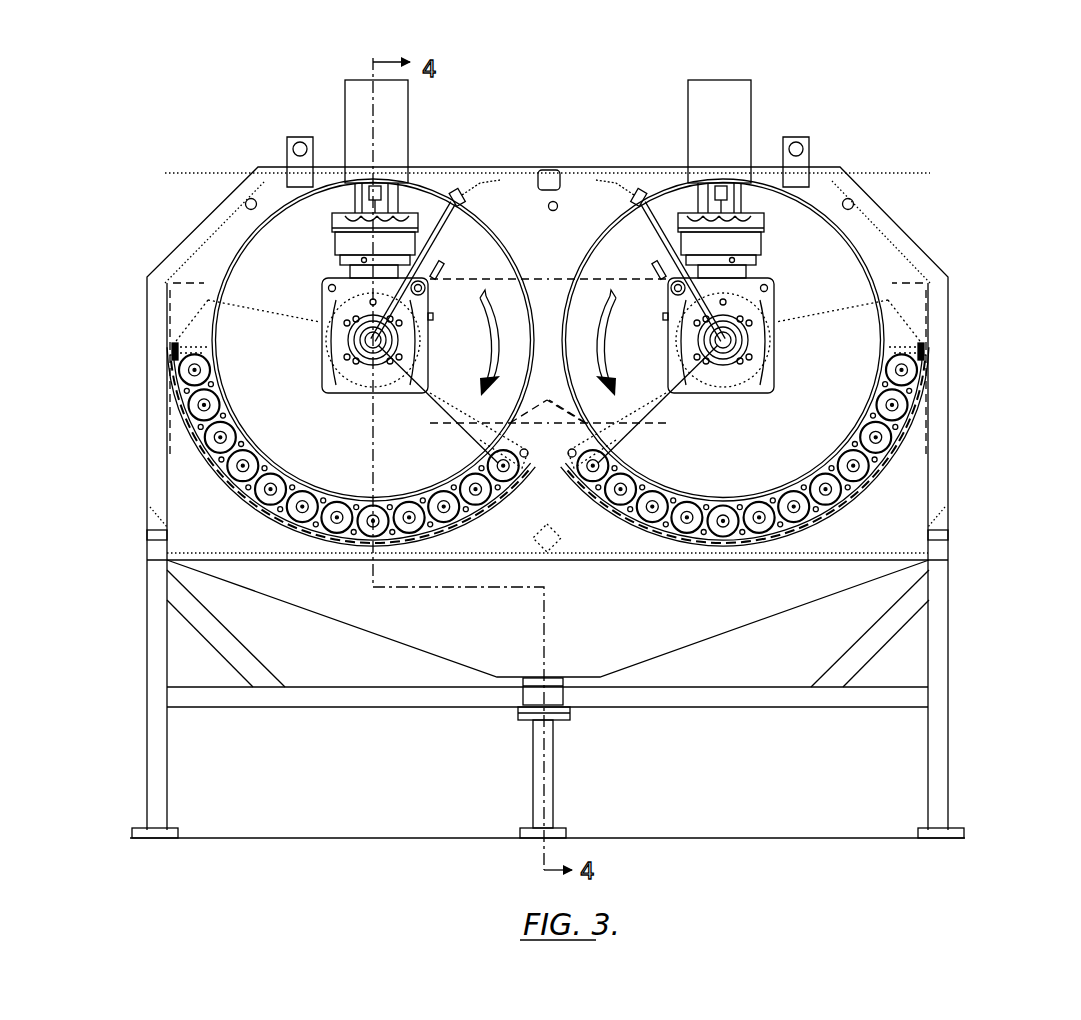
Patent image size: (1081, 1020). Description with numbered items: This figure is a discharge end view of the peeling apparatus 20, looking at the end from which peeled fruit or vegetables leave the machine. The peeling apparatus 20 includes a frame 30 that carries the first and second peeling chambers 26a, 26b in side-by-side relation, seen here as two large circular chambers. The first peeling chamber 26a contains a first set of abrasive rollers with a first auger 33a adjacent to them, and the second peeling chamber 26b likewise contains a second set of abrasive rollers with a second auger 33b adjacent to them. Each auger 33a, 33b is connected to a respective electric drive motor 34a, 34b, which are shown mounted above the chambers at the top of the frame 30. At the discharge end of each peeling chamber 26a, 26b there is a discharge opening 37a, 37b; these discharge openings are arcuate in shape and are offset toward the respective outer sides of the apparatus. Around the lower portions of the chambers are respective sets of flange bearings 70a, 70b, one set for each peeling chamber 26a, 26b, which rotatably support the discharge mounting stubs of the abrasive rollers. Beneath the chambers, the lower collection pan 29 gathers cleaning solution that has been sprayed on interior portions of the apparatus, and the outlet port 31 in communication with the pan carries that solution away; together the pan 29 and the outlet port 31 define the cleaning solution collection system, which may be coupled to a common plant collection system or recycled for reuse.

The peeling apparatus 20 is at (921, 162).
The first peeling chamber 26a is at (272, 270).
The second peeling chamber 26b is at (832, 276).
The lower collection pan 29 is at (250, 590).
The frame 30 is at (772, 705).
The outlet port 31 is at (522, 710).
The first auger 33a is at (252, 333).
The second auger 33b is at (849, 370).
The first electric drive motor 34a is at (345, 100).
The second electric drive motor 34b is at (753, 115).
The first discharge opening 37a is at (272, 440).
The second discharge opening 37b is at (824, 440).
The first set of flange bearings 70a is at (240, 488).
The second set of flange bearings 70b is at (858, 502).